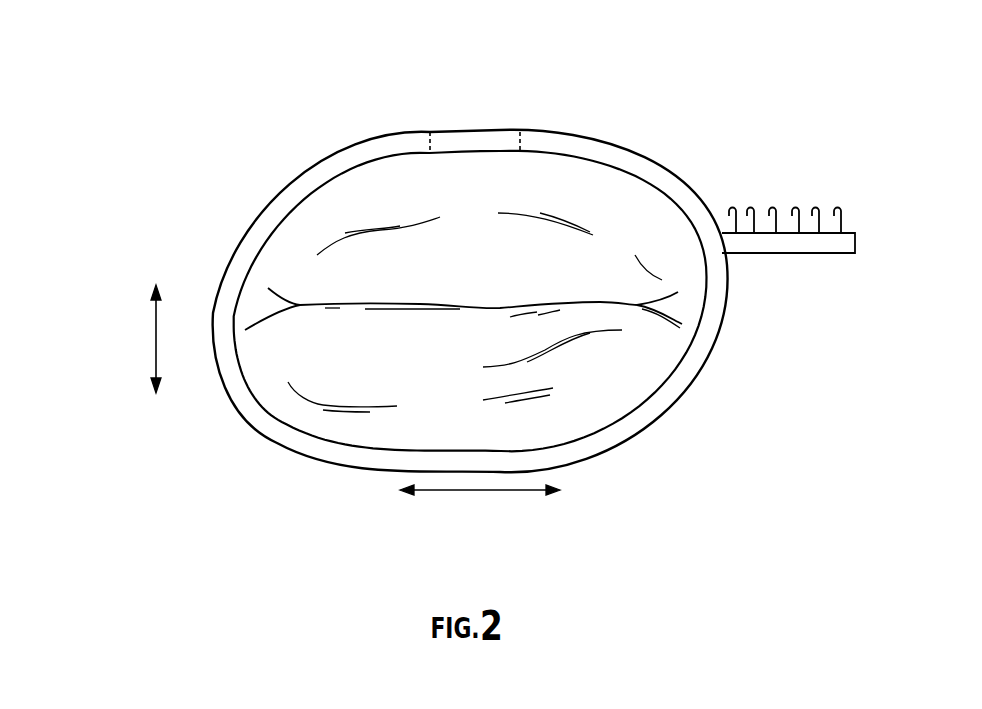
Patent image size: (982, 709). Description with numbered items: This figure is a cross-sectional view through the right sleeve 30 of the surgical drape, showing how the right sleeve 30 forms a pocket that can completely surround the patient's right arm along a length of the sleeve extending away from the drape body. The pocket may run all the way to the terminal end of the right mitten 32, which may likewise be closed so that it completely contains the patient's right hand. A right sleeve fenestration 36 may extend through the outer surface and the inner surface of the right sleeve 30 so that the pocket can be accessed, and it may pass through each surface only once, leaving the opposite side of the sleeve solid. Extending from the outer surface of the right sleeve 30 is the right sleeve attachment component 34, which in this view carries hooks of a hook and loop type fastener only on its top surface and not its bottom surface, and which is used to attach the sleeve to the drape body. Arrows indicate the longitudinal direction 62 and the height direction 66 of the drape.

The right sleeve 30 is at (578, 134).
The right mitten 32 is at (389, 351).
The right sleeve attachment component 34 is at (768, 210).
The right sleeve fenestration 36 is at (520, 134).
The longitudinal direction 62 is at (497, 491).
The height direction 66 is at (156, 330).